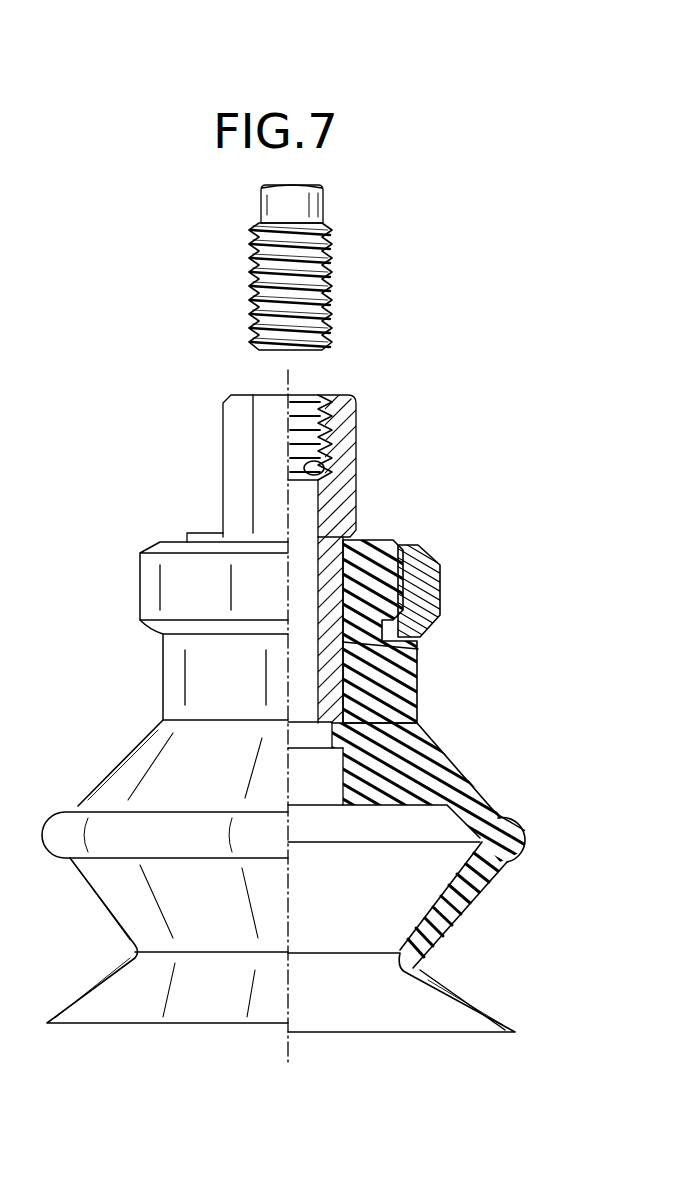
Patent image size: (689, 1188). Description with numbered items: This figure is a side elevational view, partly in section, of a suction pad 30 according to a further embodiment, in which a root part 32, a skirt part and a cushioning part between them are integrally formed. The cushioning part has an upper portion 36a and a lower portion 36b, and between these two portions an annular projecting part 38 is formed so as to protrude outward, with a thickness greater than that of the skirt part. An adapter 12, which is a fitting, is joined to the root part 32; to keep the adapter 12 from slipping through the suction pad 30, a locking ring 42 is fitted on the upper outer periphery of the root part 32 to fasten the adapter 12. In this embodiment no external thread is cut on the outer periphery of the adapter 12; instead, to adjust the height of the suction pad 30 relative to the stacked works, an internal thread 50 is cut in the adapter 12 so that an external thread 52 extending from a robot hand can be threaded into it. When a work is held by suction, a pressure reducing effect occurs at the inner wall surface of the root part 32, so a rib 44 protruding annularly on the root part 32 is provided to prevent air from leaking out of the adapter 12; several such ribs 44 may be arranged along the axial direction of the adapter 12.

The external thread 52 is at (333, 290).
The adapter 12 is at (357, 422).
The internal thread 50 is at (318, 477).
The locking ring 42 is at (405, 570).
The rib 44 is at (397, 650).
The root part 32 is at (420, 673).
The suction pad 30 is at (138, 668).
The upper portion of the cushioning part 36a is at (470, 780).
The annular projecting part 38 is at (526, 838).
The lower portion of the cushioning part 36b is at (471, 909).